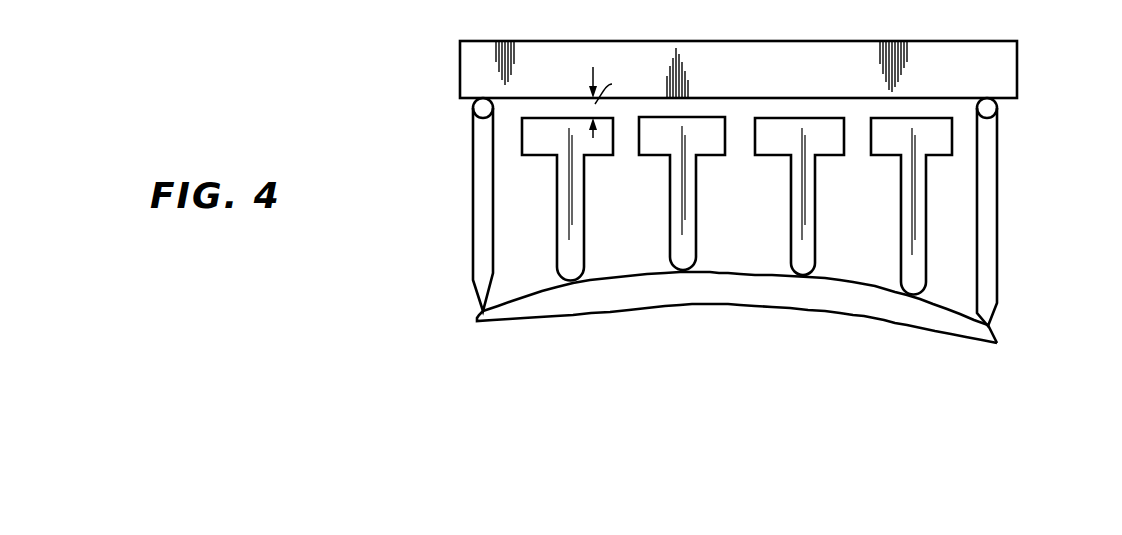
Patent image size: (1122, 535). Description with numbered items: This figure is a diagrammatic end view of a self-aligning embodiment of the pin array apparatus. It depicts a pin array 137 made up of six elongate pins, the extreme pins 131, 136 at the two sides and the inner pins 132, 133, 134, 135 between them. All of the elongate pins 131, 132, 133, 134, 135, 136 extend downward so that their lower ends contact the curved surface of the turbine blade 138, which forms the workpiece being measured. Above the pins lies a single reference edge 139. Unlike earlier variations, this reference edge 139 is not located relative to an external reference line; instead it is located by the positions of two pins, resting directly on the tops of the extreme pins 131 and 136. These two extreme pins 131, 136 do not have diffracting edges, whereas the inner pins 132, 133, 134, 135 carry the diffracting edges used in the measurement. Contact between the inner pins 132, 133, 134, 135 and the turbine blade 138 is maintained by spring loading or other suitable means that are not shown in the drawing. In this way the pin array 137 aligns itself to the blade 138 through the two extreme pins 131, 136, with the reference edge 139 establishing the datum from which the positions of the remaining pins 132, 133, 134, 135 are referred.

The elongate pin 131 is at (998, 170).
The elongate pin 132 is at (901, 203).
The elongate pin 133 is at (791, 207).
The elongate pin 134 is at (670, 213).
The elongate pin 135 is at (557, 221).
The elongate pin 136 is at (477, 175).
The pin array 137 is at (1027, 129).
The turbine blade 138 is at (720, 305).
The single reference edge 139 is at (752, 53).